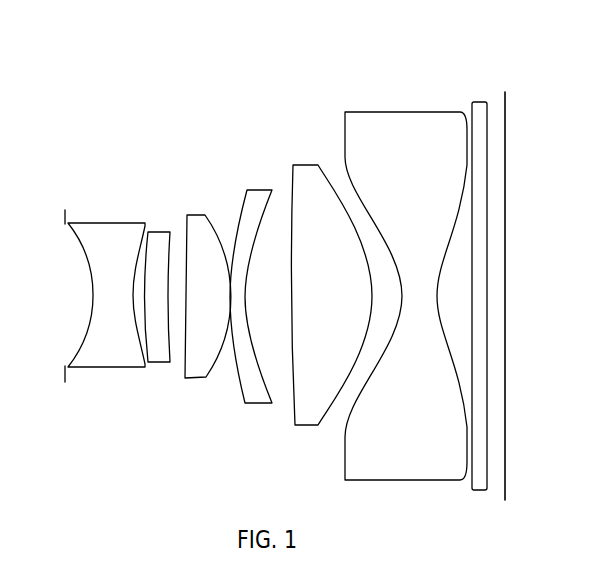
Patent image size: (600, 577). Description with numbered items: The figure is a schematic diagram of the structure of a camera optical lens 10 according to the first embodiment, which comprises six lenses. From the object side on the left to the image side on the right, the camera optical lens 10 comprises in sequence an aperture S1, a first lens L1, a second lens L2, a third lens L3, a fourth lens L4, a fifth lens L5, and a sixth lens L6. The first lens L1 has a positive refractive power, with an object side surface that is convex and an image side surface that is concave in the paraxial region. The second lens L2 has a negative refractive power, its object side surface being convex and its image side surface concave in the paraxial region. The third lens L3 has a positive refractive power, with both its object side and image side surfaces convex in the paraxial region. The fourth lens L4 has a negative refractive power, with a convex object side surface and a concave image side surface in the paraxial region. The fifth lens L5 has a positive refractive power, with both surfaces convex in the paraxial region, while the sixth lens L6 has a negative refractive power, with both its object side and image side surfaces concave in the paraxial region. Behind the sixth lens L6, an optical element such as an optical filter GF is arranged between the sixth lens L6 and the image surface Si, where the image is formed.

The camera optical lens 10 is at (287, 35).
The aperture S1 is at (53, 291).
The first lens L1 is at (106, 284).
The second lens L2 is at (160, 279).
The third lens L3 is at (208, 277).
The fourth lens L4 is at (251, 276).
The fifth lens L5 is at (331, 276).
The sixth lens L6 is at (406, 278).
The optical filter GF is at (479, 278).
The image surface Si is at (503, 274).